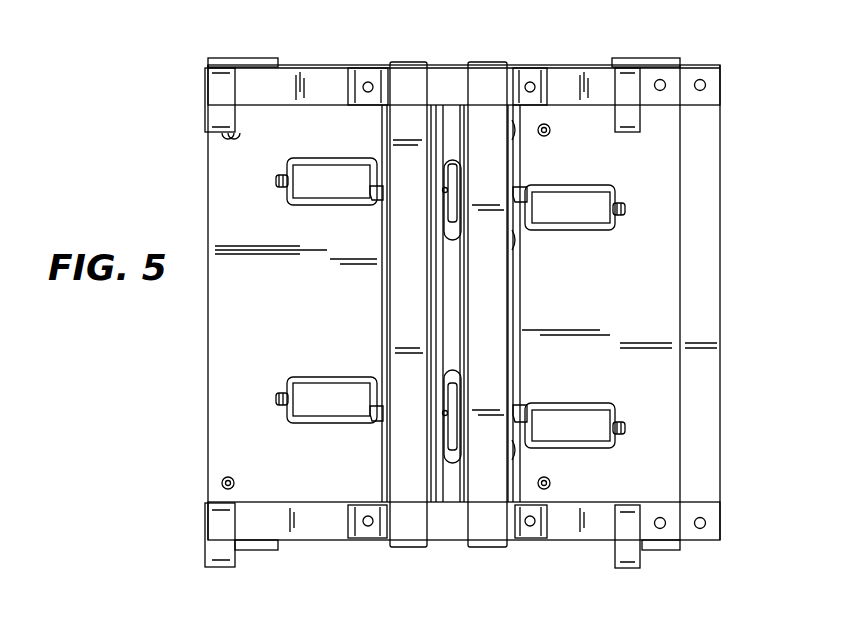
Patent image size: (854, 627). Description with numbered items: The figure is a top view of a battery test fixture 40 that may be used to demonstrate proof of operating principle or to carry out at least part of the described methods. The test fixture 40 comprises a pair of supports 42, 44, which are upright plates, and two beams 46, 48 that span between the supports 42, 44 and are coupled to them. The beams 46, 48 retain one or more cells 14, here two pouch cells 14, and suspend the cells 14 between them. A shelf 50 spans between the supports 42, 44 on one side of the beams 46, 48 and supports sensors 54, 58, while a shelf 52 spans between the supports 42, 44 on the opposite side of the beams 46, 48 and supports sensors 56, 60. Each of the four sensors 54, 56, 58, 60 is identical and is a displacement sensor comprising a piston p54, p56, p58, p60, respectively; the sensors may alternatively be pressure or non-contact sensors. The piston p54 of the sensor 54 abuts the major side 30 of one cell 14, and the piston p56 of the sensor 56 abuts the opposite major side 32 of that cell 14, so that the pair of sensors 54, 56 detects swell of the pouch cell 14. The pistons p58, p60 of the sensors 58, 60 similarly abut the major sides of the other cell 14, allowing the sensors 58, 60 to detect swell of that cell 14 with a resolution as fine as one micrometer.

The test fixture 40 is at (168, 192).
The support 42 is at (267, 535).
The support 44 is at (256, 78).
The beam 46 is at (411, 62).
The beam 48 is at (487, 63).
The shelf 50 is at (230, 342).
The shelf 52 is at (648, 280).
The sensor 54 is at (275, 181).
The piston p54 is at (378, 203).
The sensor 56 is at (622, 208).
The piston p56 is at (518, 187).
The sensor 58 is at (278, 398).
The piston p58 is at (378, 425).
The sensor 60 is at (622, 427).
The piston p60 is at (520, 405).
The major side 30 is at (440, 178).
The major side 32 is at (458, 222).
The pouch cell 14 is at (452, 366).